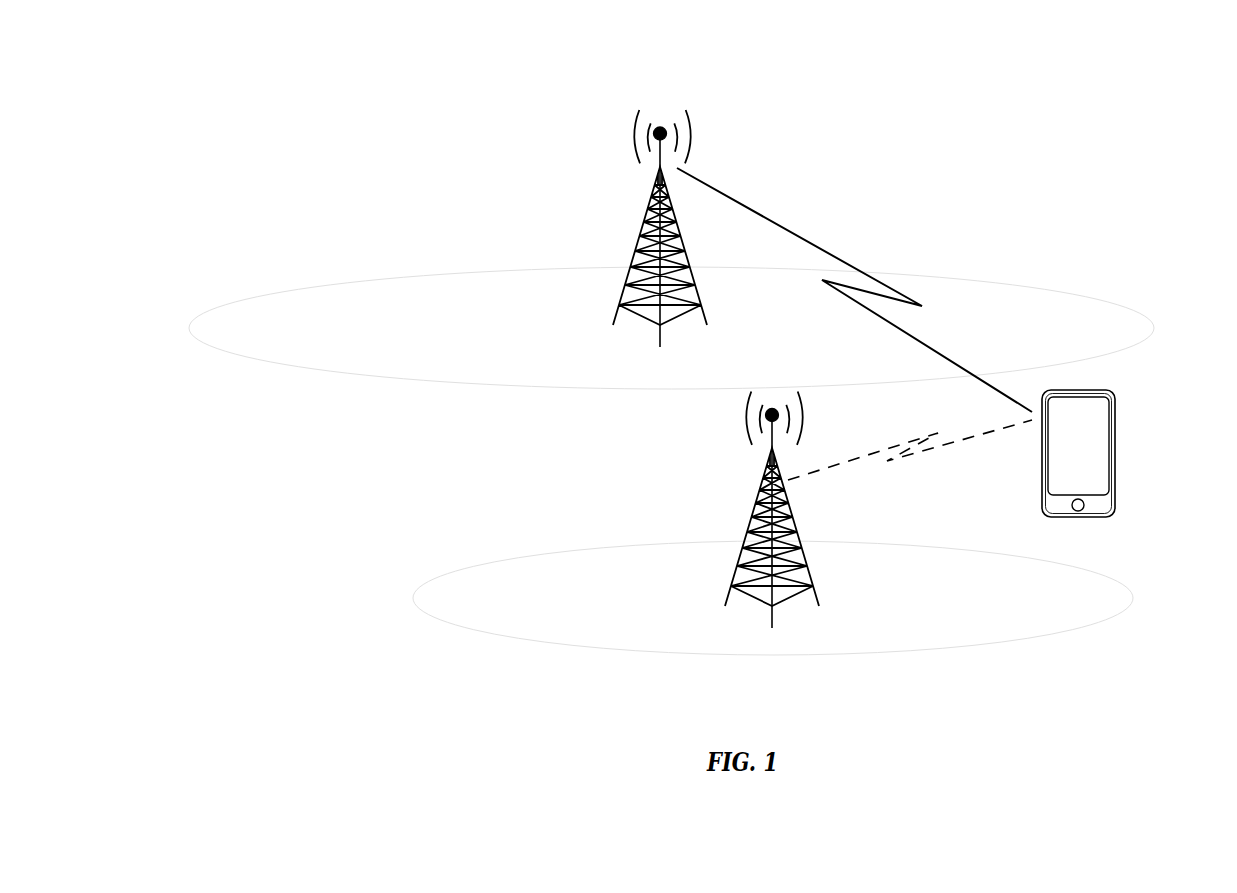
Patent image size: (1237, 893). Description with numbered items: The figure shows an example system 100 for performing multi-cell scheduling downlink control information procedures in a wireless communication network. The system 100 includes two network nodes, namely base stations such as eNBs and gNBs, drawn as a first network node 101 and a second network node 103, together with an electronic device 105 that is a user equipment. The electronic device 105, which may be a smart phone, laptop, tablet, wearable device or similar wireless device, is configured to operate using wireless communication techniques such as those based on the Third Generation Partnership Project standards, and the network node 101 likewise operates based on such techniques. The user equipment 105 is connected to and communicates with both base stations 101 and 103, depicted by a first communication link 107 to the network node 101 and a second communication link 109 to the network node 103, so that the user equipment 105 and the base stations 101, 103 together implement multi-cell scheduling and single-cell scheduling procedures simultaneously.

The system 100 is at (1100, 68).
The network node 101 is at (641, 223).
The network node 103 is at (745, 510).
The electronic device 105 is at (1115, 404).
The first communication link 107 is at (854, 290).
The second communication link 109 is at (910, 456).